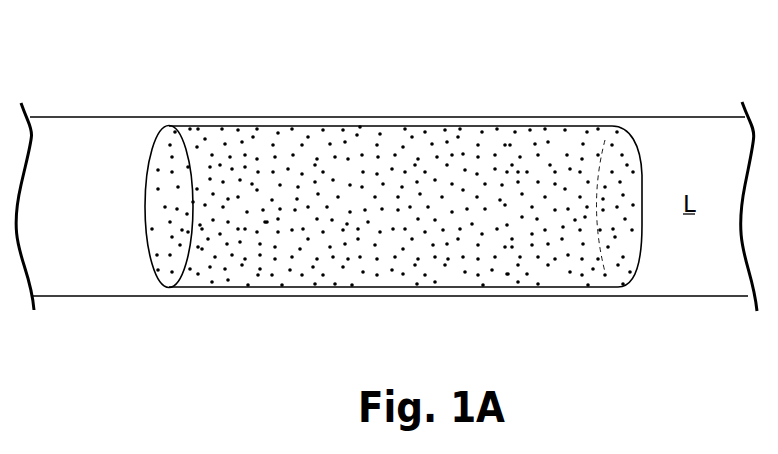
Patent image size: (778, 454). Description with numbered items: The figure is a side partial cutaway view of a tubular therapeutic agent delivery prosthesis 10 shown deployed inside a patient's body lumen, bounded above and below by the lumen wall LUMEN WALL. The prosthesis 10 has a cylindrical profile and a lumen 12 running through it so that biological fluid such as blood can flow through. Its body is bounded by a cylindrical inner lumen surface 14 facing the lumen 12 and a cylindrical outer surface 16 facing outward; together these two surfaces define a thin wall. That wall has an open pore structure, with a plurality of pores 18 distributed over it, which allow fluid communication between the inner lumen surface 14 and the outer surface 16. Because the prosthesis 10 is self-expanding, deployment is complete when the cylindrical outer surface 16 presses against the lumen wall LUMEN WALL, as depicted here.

The tubular therapeutic agent delivery prosthesis 10 is at (540, 97).
The lumen 12 is at (163, 213).
The cylindrical inner lumen surface 14 is at (157, 189).
The cylindrical outer surface 16 is at (453, 277).
The pores 18 is at (278, 132).
The lumen wall LUMEN WALL is at (644, 116).